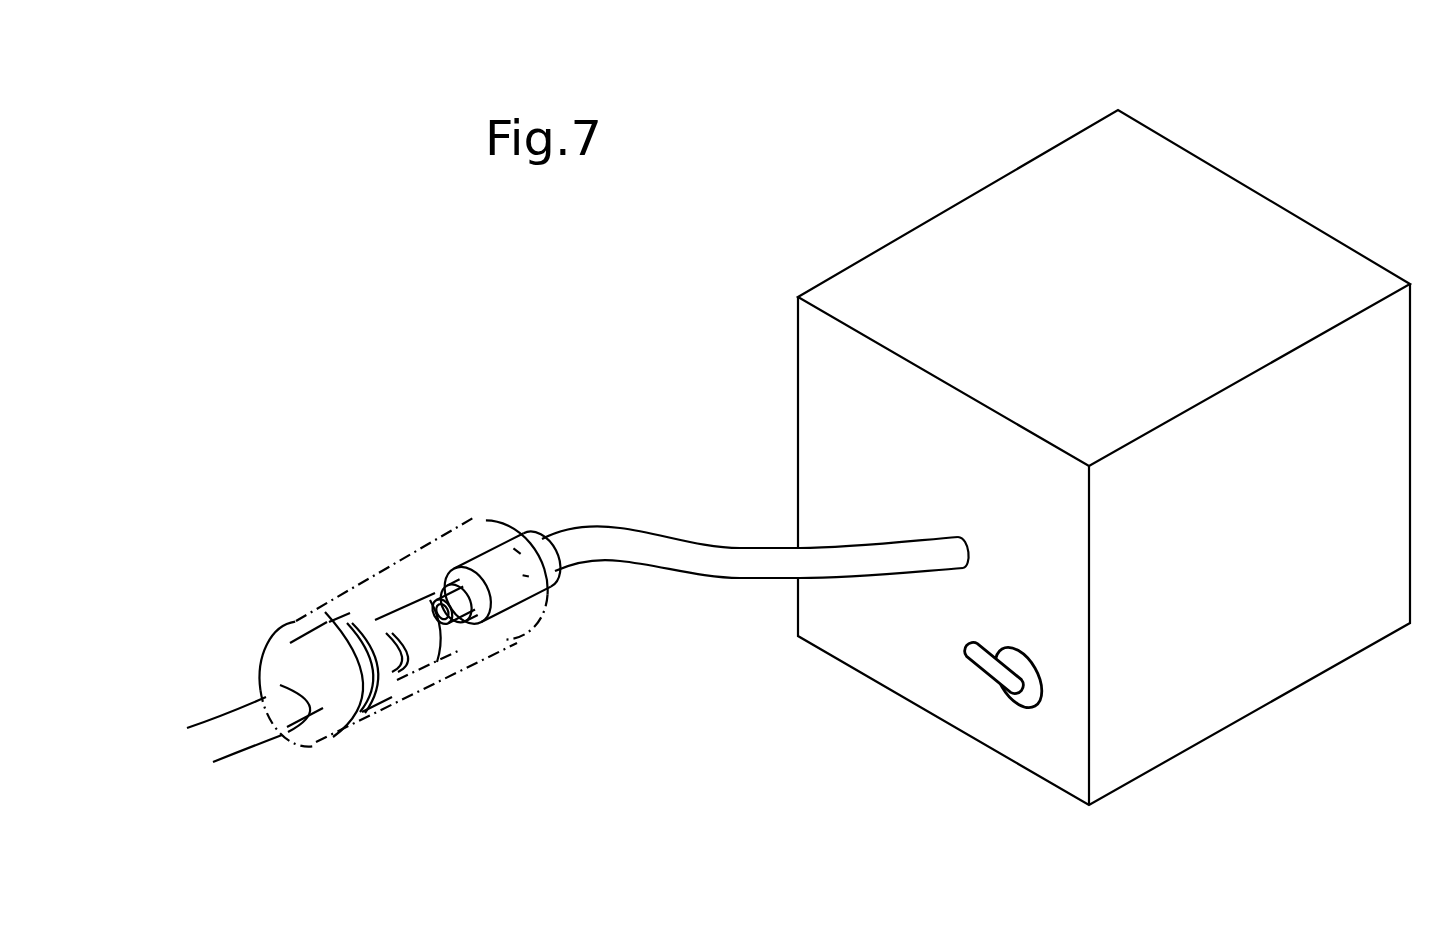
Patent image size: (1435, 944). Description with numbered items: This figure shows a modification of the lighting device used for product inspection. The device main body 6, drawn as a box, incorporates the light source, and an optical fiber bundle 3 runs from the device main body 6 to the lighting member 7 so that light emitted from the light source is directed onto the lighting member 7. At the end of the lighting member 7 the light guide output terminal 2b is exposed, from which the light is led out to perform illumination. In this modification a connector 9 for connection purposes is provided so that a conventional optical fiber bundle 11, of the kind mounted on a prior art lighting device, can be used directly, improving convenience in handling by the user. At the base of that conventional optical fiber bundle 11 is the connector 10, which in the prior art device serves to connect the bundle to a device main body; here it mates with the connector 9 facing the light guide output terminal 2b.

The device main body 6 is at (987, 160).
The optical fiber bundle 3 is at (648, 567).
The lighting member 7 is at (493, 550).
The light guide output terminal 2b is at (452, 638).
The connector 9 is at (402, 713).
The connector 10 is at (322, 745).
The optical fiber bundle 11 is at (237, 755).